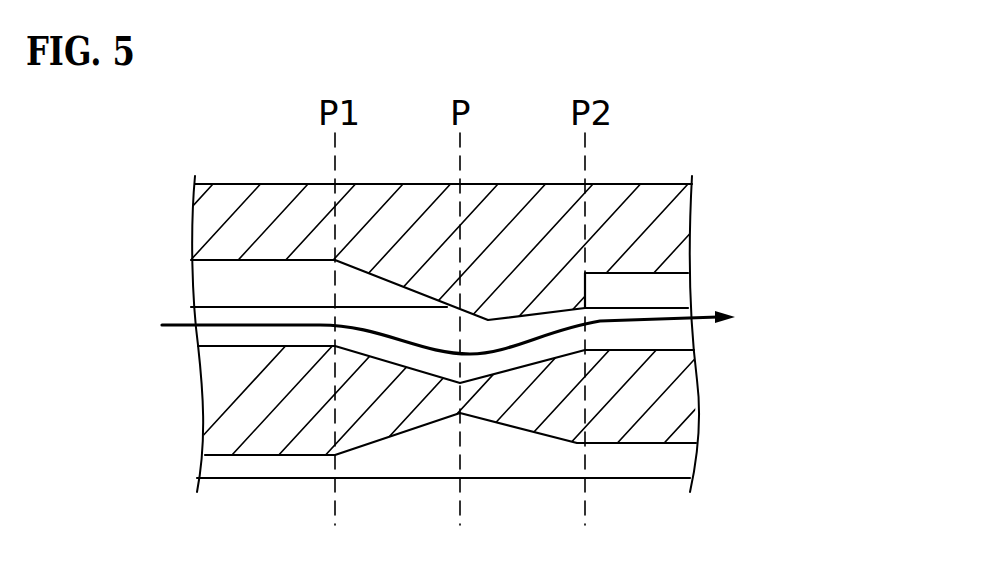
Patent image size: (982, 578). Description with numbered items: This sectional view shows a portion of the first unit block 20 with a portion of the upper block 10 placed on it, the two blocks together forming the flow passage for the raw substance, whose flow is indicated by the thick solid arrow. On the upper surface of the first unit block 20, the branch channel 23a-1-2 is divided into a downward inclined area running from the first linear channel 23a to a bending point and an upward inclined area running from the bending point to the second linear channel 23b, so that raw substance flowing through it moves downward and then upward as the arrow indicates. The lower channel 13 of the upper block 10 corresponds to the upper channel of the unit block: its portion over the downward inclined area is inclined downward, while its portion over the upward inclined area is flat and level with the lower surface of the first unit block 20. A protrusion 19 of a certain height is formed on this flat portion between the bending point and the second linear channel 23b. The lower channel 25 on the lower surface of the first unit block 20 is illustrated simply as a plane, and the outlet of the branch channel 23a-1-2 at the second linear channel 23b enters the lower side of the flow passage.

The upper block 10 is at (722, 219).
The lower channel 13 is at (238, 272).
The protrusion 19 is at (514, 338).
The first unit block 20 is at (742, 387).
The first linear channel 23a is at (214, 337).
The branch channel 23a-1-2 is at (384, 350).
The second linear channel 23b is at (686, 336).
The lower channel 25 is at (678, 458).